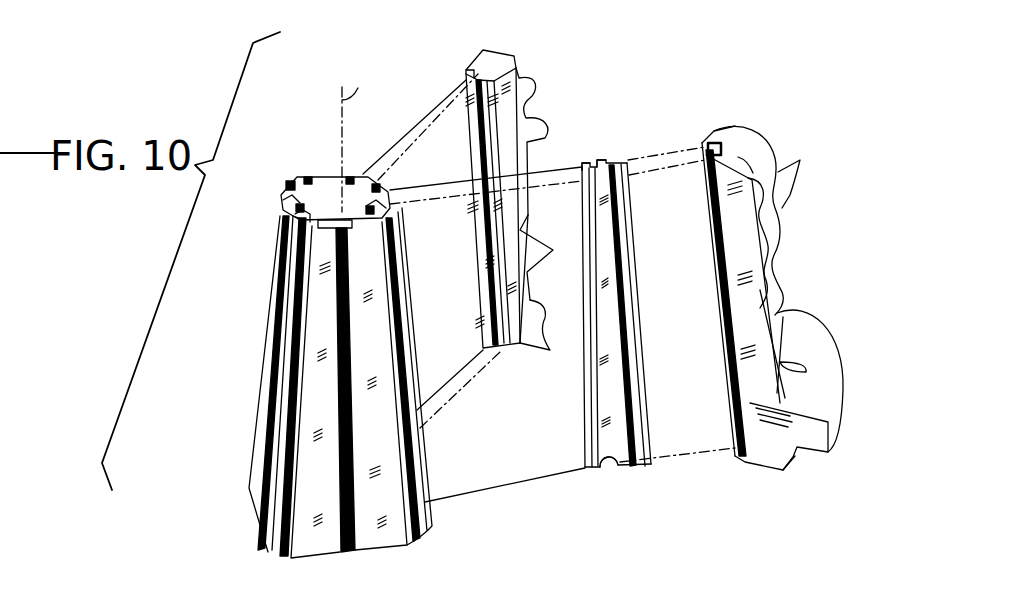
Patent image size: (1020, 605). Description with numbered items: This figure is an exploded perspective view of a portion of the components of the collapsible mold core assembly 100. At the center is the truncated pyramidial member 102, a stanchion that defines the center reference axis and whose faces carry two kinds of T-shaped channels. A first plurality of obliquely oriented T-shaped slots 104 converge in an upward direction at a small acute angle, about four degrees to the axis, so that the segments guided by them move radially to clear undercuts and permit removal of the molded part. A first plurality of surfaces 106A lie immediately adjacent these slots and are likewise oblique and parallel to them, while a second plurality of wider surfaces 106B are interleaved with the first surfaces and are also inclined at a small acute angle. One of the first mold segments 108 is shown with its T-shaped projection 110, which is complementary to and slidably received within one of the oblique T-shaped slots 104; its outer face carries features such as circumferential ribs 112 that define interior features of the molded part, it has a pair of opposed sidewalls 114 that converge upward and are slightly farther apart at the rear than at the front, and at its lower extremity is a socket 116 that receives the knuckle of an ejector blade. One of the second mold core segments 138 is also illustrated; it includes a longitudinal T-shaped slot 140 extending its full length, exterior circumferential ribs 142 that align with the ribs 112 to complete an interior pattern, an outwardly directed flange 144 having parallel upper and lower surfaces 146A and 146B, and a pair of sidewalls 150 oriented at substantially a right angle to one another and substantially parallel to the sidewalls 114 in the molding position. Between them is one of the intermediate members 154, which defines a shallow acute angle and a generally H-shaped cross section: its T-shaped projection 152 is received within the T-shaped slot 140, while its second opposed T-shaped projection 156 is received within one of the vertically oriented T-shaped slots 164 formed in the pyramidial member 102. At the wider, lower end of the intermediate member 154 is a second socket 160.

The collapsible mold core assembly 100 is at (562, 49).
The truncated pyramidial member 102 is at (355, 173).
The obliquely oriented T-shaped slots 104 is at (295, 192).
The first plurality of surfaces 106A is at (310, 245).
The second plurality of wider surfaces 106B is at (340, 575).
The first mold segments 108 is at (505, 53).
The T-shaped projections 110 is at (455, 88).
The circumferential ribs 112 is at (546, 112).
The opposed sidewalls 114 is at (480, 60).
The socket 116 is at (545, 350).
The second mold core segments 138 is at (740, 145).
The longitudinal T-shaped slot 140 is at (727, 121).
The circumferential ribs 142 is at (807, 160).
The outwardly directed flange 144 is at (833, 350).
The upper surface 146A is at (787, 330).
The lower surface 146B is at (813, 453).
The sidewalls 150 is at (704, 125).
The T-shaped projection 152 is at (618, 160).
The intermediate members 154 is at (618, 323).
The second T-shaped projection 156 is at (603, 162).
The second socket 160 is at (618, 462).
The vertically oriented T-shaped slots 164 is at (325, 175).